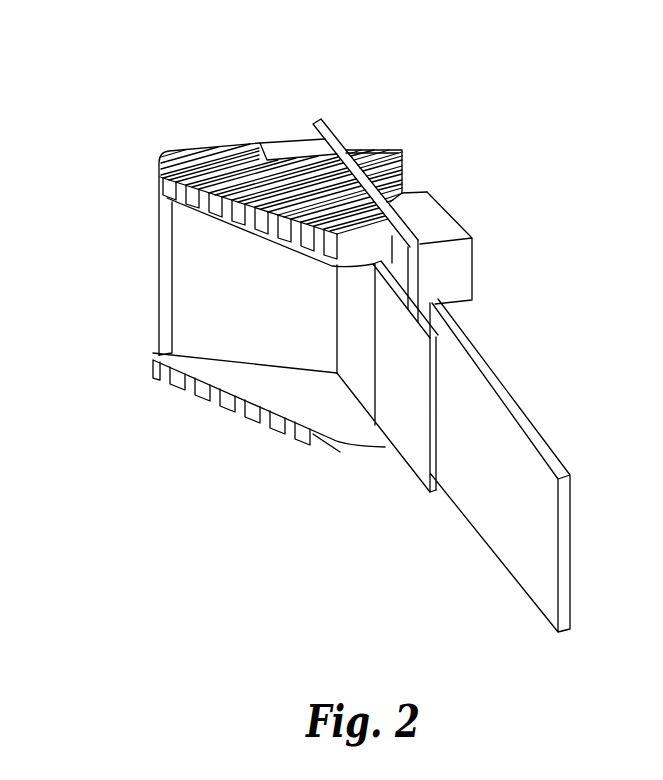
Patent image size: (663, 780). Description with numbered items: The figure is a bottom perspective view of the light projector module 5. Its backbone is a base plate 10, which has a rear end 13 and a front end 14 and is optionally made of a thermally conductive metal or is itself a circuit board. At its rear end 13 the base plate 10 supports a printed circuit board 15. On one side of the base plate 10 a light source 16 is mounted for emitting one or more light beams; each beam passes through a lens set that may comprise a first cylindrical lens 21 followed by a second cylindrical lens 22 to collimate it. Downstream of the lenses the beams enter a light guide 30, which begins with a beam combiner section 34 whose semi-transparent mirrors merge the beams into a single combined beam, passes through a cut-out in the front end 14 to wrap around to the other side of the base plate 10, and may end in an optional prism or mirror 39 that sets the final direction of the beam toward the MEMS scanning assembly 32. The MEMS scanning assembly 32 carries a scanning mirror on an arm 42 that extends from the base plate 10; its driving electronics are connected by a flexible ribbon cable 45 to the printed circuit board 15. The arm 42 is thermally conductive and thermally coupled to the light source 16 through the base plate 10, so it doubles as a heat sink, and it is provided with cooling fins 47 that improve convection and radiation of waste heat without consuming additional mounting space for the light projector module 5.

The light projector module 5 is at (121, 540).
The base plate 10 is at (420, 272).
The rear end 13 is at (515, 258).
The front end 14 is at (420, 71).
The printed circuit board 15 is at (543, 443).
The light source 16 is at (445, 227).
The first cylindrical lens 21 is at (427, 192).
The second cylindrical lens 22 is at (402, 153).
The light guide 30 is at (382, 72).
The MEMS scanning assembly 32 is at (250, 456).
The beam combiner section 34 is at (365, 146).
The prism or mirror 39 is at (298, 142).
The arm 42 is at (205, 143).
The ribbon cable 45 is at (190, 335).
The cooling fins 47 is at (183, 198).